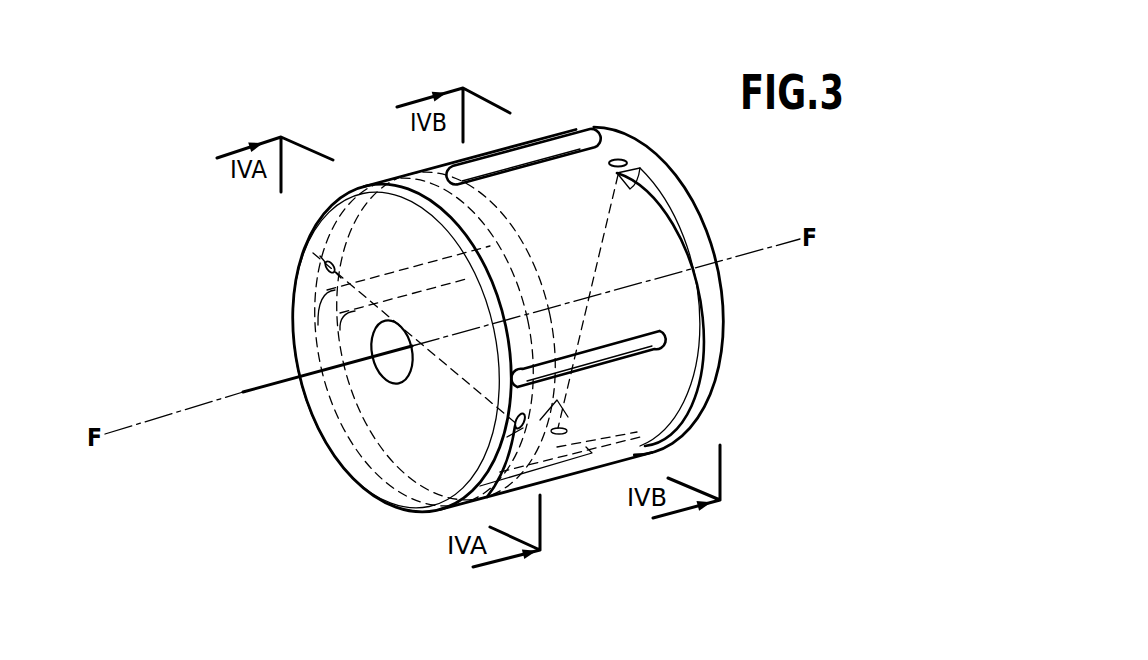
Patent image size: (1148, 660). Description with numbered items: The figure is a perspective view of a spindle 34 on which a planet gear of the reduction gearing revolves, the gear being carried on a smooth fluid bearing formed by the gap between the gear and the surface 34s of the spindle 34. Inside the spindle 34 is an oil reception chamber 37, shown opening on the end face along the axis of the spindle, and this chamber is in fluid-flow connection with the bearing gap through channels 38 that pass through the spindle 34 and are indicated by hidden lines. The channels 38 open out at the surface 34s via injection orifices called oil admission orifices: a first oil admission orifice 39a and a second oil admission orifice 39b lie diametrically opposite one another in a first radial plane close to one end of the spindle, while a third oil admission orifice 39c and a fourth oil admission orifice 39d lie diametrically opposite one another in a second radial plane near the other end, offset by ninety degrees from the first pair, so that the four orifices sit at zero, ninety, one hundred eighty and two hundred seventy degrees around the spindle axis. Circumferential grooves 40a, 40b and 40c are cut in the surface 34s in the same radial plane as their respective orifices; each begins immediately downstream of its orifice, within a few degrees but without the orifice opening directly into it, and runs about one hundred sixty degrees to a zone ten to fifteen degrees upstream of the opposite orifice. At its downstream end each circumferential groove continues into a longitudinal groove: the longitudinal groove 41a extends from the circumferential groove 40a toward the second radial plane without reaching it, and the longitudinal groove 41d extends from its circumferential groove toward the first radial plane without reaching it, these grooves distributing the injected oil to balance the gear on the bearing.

The spindle 34 is at (709, 222).
The surface of the spindle 34s is at (548, 263).
The oil reception chamber 37 is at (396, 372).
The channels 38 is at (476, 393).
The first oil admission orifice 39a is at (322, 262).
The second oil admission orifice 39b is at (512, 442).
The third oil admission orifice 39c is at (620, 158).
The fourth oil admission orifice 39d is at (556, 448).
The circumferential groove 40a is at (420, 195).
The circumferential groove 40b is at (404, 514).
The circumferential groove 40c is at (712, 357).
The longitudinal groove 41a is at (593, 362).
The longitudinal groove 41d is at (496, 178).